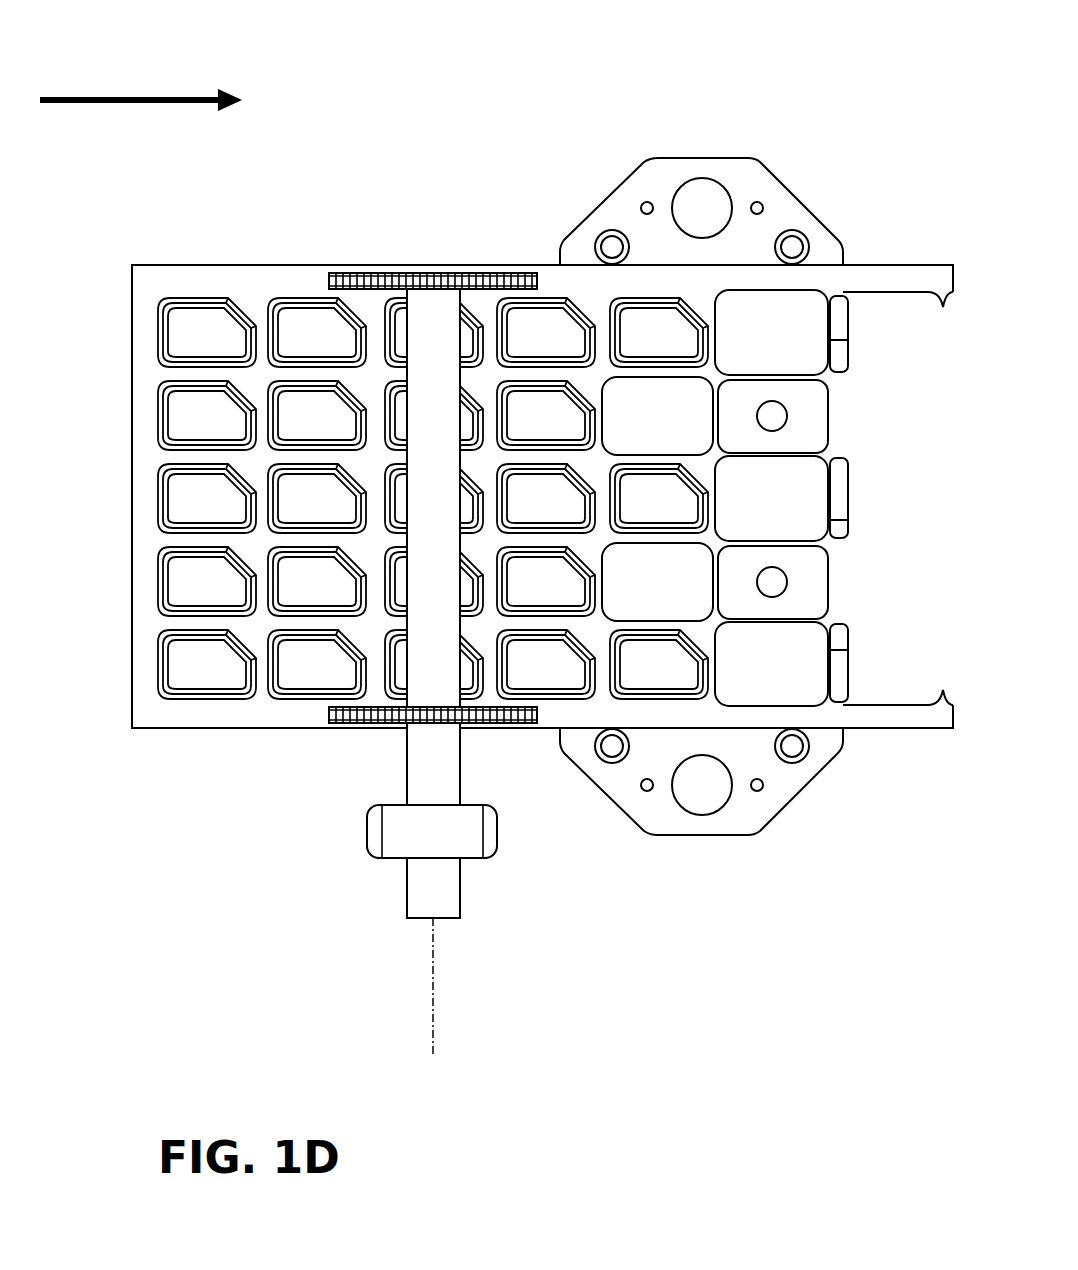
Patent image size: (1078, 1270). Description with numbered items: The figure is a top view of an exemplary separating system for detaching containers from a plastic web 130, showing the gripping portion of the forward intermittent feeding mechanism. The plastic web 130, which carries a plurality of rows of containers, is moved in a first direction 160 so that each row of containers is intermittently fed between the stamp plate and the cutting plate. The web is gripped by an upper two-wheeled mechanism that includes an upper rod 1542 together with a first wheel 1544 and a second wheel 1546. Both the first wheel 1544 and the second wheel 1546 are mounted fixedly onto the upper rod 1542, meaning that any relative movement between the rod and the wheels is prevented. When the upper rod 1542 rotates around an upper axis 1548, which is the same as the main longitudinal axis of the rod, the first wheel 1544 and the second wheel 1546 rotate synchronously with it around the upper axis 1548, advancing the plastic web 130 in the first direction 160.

The first direction 160 is at (192, 98).
The plastic web 130 is at (130, 390).
The upper rod 1542 is at (462, 760).
The first wheel 1544 is at (357, 725).
The second wheel 1546 is at (329, 280).
The upper axis 1548 is at (434, 965).